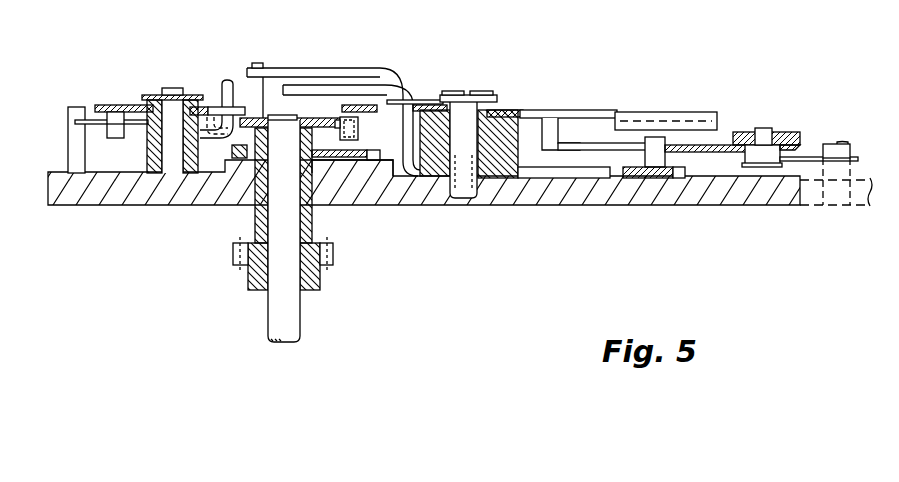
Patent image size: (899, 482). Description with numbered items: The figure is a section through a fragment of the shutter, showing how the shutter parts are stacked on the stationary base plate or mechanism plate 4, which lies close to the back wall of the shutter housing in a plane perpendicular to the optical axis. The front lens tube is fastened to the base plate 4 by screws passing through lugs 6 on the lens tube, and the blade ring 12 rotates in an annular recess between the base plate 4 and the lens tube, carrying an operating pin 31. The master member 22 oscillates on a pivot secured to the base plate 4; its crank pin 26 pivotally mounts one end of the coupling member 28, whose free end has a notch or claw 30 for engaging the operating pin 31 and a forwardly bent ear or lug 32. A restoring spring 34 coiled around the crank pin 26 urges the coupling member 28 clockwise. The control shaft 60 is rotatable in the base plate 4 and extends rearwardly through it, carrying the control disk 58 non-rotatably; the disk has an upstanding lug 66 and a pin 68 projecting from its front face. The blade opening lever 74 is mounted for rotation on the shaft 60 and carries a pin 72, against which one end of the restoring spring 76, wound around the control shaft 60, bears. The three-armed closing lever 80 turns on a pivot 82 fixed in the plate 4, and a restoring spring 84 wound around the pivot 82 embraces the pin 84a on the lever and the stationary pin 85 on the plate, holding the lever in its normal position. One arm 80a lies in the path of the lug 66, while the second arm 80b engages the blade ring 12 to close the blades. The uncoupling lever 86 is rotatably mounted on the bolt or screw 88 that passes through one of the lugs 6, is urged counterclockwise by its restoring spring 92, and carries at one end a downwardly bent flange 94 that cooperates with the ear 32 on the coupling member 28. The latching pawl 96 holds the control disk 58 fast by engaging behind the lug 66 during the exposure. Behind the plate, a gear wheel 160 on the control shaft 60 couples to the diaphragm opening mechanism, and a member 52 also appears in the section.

The base plate 4 is at (738, 197).
The lugs on lens tube 6 is at (503, 150).
The blade ring 12 is at (654, 156).
The master member 22 is at (794, 133).
The crank pin 26 is at (766, 129).
The coupling member 28 is at (625, 140).
The notch or claw 30 is at (570, 143).
The operating pin 31 is at (651, 172).
The ear or lug 32 is at (553, 122).
The restoring spring 34 is at (810, 155).
The bottom bar 52 is at (566, 172).
The control disk 58 is at (236, 146).
The control shaft 60 is at (293, 317).
The lug 66 is at (231, 80).
The pin 68 is at (262, 65).
The pin 72 is at (357, 160).
The blade opening lever 74 is at (240, 158).
The restoring spring 76 is at (335, 158).
The closing lever 80 is at (133, 104).
The arm of closing lever 80a is at (222, 108).
The second arm of closing lever 80b is at (213, 113).
The pivot 82 is at (172, 87).
The restoring spring 84 is at (137, 124).
The pin 84a is at (120, 136).
The stationary pin 85 is at (72, 137).
The uncoupling lever 86 is at (547, 110).
The bolt or screw 88 is at (478, 93).
The restoring spring 92 is at (410, 100).
The flange or lug 94 is at (713, 125).
The latching pawl 96 is at (354, 104).
The gear wheel 160 is at (245, 262).